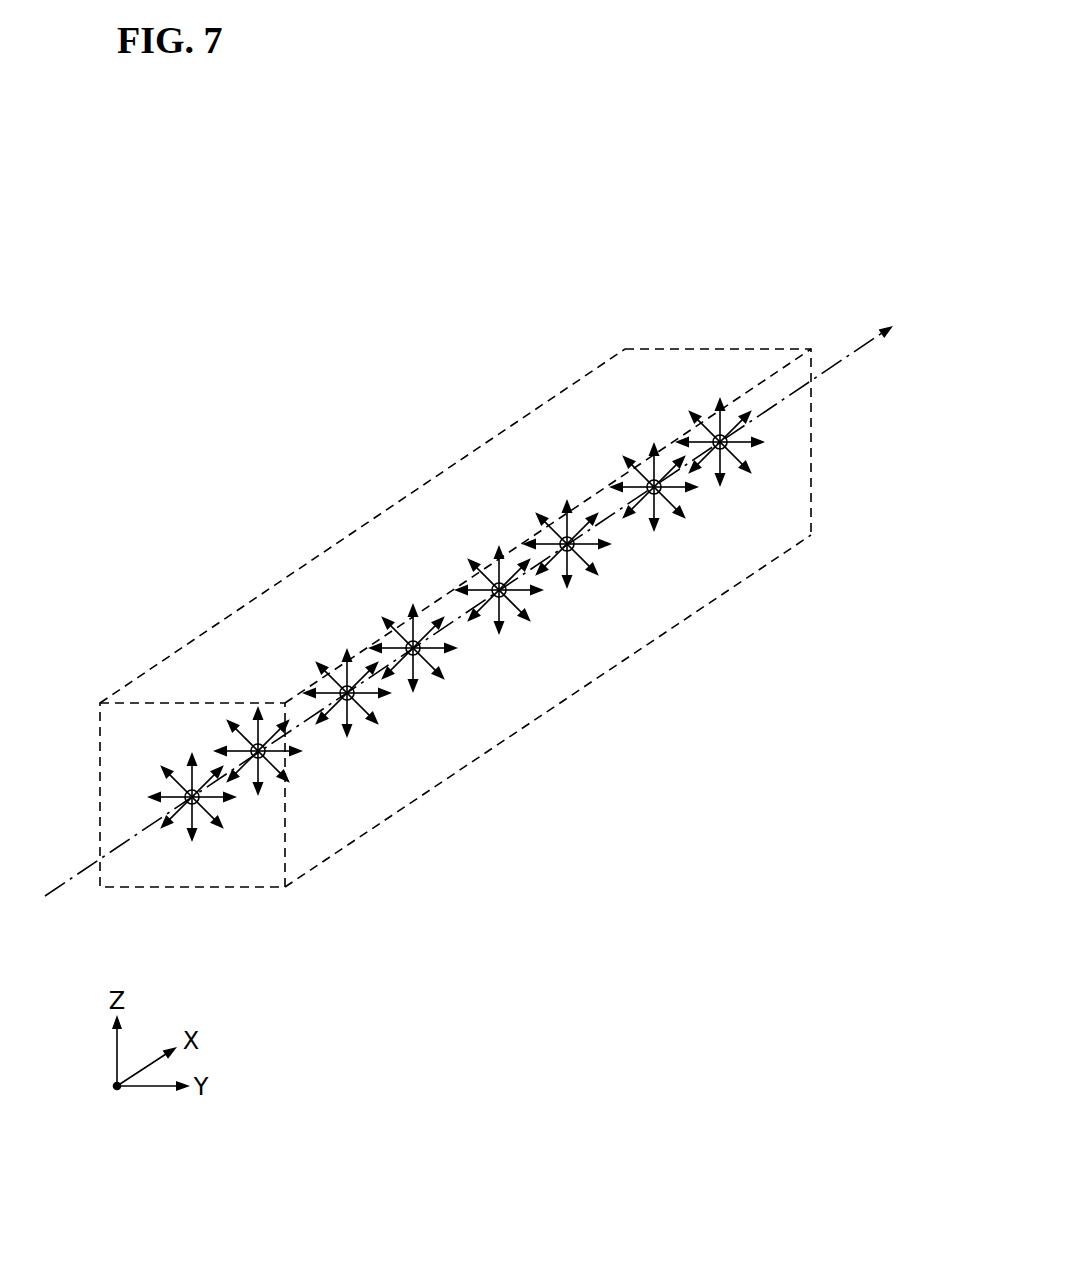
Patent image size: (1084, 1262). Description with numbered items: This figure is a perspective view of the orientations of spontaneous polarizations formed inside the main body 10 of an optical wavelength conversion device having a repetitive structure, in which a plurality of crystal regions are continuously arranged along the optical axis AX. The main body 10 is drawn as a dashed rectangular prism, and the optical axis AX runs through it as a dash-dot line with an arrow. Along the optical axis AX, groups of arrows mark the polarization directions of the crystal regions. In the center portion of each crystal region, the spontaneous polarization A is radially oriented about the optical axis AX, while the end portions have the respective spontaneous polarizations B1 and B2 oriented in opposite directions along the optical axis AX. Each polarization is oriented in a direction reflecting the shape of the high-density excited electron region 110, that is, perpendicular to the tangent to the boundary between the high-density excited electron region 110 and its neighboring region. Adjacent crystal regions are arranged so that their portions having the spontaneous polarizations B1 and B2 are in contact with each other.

The main body 10 is at (402, 810).
The high-density excited electron region 110 is at (455, 635).
The spontaneous polarization A is at (455, 593).
The spontaneous polarization B1 is at (433, 605).
The spontaneous polarization B2 is at (478, 632).
The optical axis AX is at (486, 596).